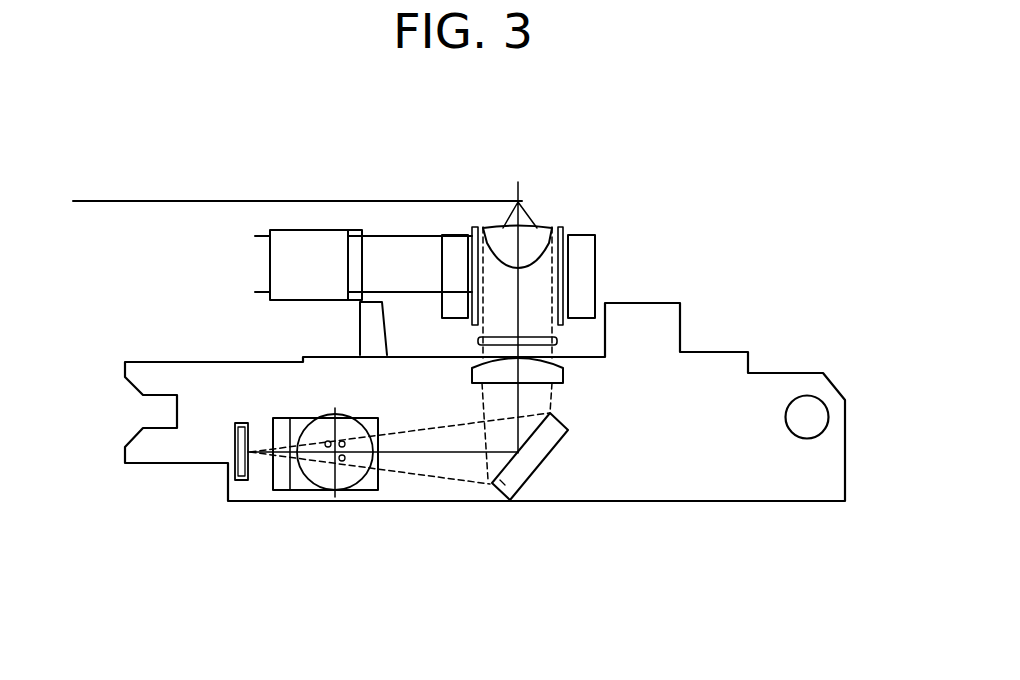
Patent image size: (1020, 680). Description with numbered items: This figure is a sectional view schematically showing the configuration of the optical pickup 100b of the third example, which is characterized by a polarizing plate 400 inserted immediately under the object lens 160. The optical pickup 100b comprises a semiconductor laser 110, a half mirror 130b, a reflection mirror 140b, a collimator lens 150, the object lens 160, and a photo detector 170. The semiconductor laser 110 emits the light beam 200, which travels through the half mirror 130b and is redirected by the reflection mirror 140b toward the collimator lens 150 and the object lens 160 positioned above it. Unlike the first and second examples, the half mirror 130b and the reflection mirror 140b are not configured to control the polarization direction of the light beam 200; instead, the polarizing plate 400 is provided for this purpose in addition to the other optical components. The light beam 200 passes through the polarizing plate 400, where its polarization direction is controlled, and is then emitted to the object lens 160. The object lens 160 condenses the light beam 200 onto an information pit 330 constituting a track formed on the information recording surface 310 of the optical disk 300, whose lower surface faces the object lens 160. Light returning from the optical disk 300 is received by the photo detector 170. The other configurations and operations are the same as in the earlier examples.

The optical pickup 100b is at (342, 565).
The semiconductor laser 110 is at (343, 423).
The half mirror 130b is at (280, 483).
The reflection mirror 140b is at (500, 493).
The collimator lens 150 is at (550, 377).
The object lens 160 is at (538, 238).
The photo detector 170 is at (236, 423).
The light beam 200 is at (423, 475).
The optical disk 300 is at (367, 160).
The information recording surface 310 is at (187, 215).
The information pit 330 is at (520, 202).
The polarizing plate 400 is at (478, 340).